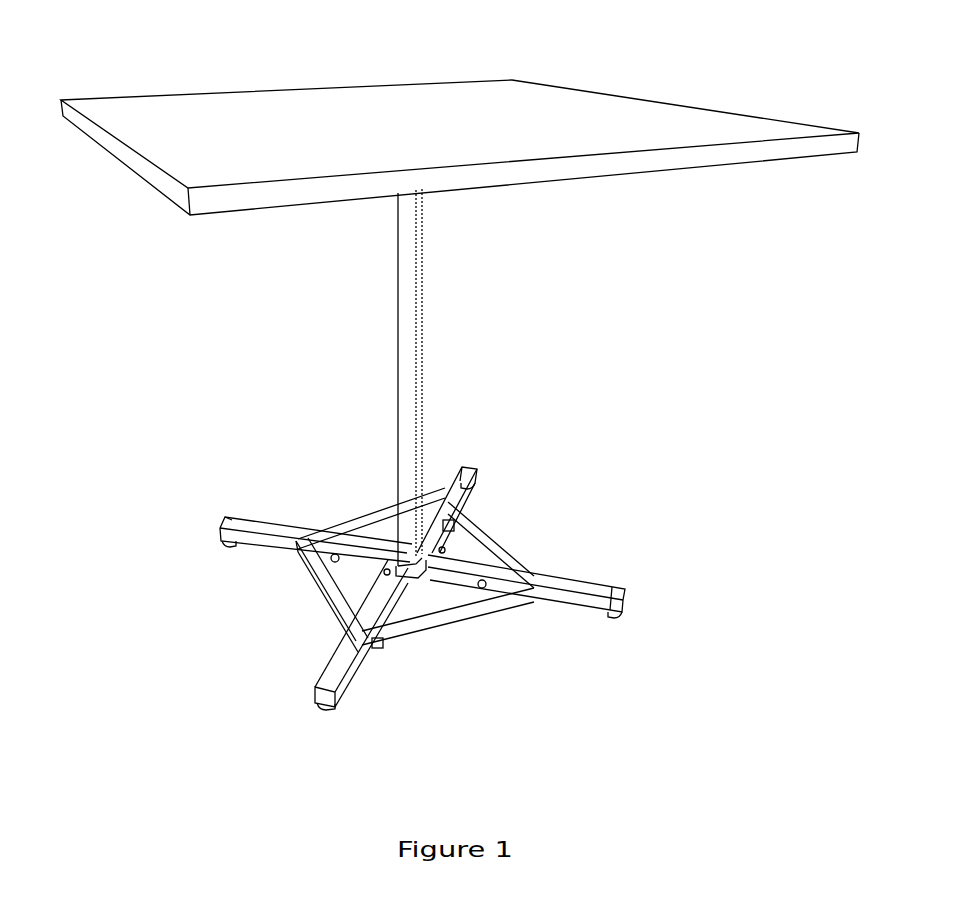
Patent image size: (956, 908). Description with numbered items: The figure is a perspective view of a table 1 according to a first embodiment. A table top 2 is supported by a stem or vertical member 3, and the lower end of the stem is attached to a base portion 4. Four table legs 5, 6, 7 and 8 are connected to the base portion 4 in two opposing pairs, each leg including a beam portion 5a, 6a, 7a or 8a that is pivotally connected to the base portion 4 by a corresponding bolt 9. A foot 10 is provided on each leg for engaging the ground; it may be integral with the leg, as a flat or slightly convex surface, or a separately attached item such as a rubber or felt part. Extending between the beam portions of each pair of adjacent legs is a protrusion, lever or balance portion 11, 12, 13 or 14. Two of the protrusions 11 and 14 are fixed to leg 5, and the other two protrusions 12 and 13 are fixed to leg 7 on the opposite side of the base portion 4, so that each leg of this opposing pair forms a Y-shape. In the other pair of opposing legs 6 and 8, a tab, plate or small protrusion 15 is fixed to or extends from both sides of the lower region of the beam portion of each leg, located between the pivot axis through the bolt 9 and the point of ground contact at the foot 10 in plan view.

The table 1 is at (660, 369).
The table top 2 is at (656, 165).
The stem or vertical member 3 is at (404, 277).
The base portion 4 is at (460, 562).
The table leg 5 is at (288, 502).
The beam portion 5a is at (285, 532).
The table leg 6 is at (490, 481).
The beam portion 6a is at (462, 477).
The table leg 7 is at (573, 603).
The beam portion 7a is at (592, 583).
The table leg 8 is at (327, 659).
The beam portion 8a is at (341, 656).
The bolt 9 is at (385, 574).
The foot 10 is at (473, 490).
The protrusion 11 is at (367, 522).
The protrusion 12 is at (507, 553).
The protrusion 13 is at (433, 620).
The protrusion 14 is at (305, 564).
The tab 15 is at (447, 524).